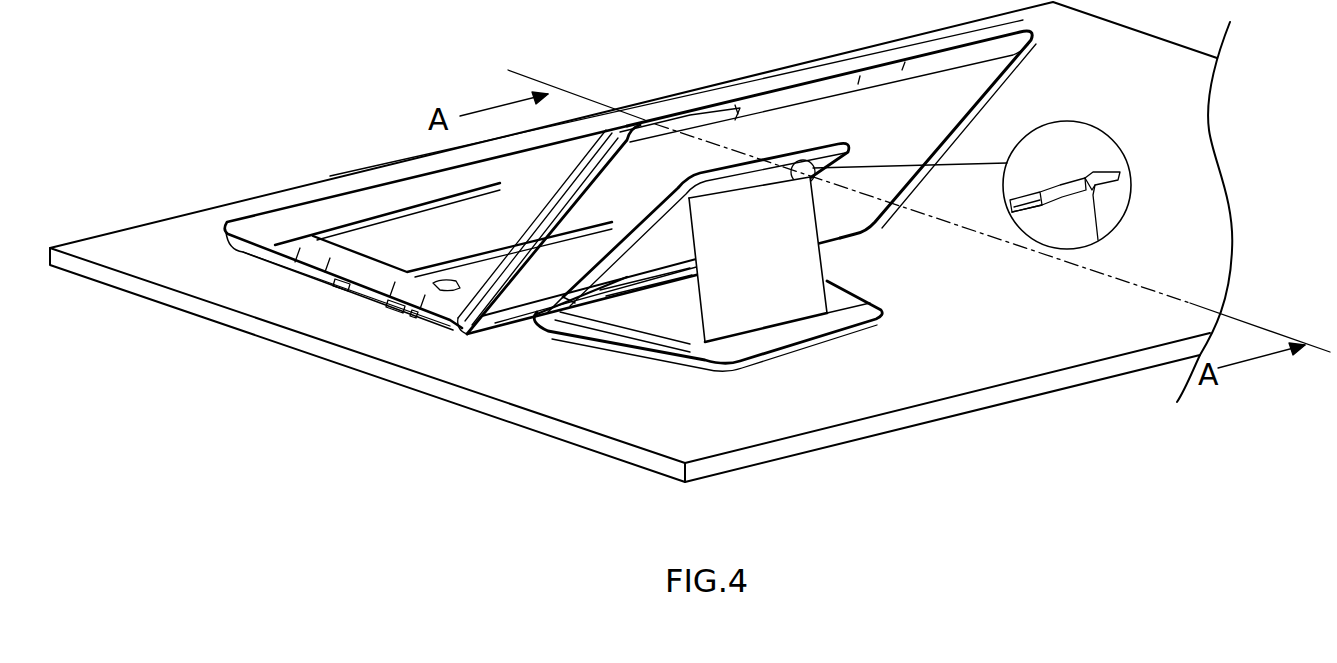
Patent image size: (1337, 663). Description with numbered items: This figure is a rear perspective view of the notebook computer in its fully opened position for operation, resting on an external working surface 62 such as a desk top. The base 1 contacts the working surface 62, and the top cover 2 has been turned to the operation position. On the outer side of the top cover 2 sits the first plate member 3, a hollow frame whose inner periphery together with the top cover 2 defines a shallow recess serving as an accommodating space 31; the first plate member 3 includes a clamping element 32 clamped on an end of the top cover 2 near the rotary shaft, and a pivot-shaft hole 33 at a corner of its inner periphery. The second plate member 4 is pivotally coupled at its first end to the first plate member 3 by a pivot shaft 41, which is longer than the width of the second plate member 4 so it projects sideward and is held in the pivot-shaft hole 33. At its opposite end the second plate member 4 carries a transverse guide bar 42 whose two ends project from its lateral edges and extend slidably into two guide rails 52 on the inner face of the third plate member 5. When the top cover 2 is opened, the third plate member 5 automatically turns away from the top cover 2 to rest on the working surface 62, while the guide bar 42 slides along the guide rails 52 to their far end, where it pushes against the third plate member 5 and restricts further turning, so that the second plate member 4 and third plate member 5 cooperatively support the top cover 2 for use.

The base 1 is at (295, 202).
The top cover 2 is at (940, 40).
The first plate member 3 is at (651, 291).
The second plate member 4 is at (808, 285).
The third plate member 5 is at (749, 360).
The accommodating space 31 is at (662, 252).
The clamping element 32 is at (545, 330).
The pivot-shaft hole 33 is at (1113, 173).
The pivot shaft 41 is at (1063, 185).
The guide bar 42 is at (770, 327).
The guide rails 52 is at (668, 333).
The working surface 62 is at (987, 395).